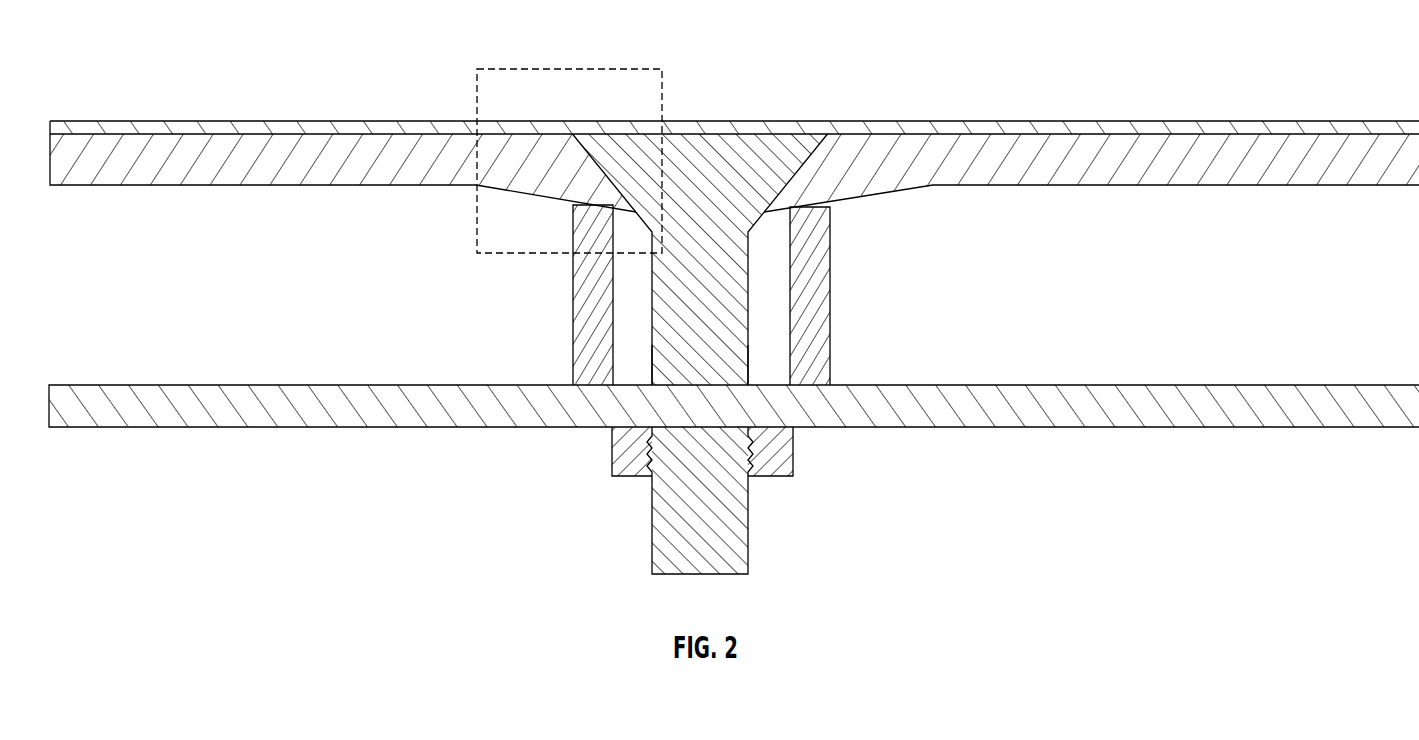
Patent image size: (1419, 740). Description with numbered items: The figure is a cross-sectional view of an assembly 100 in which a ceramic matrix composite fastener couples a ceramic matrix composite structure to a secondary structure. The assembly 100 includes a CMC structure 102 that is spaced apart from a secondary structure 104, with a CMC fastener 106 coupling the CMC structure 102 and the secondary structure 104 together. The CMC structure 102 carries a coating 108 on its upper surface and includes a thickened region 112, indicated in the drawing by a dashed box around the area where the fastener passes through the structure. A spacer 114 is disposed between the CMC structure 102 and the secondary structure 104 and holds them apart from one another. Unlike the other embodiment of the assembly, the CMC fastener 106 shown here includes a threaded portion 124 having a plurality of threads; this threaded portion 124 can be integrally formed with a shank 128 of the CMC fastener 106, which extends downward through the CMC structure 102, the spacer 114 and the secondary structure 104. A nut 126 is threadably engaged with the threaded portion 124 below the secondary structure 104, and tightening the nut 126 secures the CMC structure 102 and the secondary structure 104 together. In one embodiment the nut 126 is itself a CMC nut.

The assembly 100 is at (178, 78).
The CMC structure 102 is at (993, 143).
The secondary structure 104 is at (415, 413).
The CMC fastener 106 is at (737, 333).
The coating 108 is at (420, 130).
The thickened region 112 is at (662, 97).
The spacer 114 is at (587, 305).
The threaded portion 124 is at (693, 524).
The nut 126 is at (767, 463).
The shank 128 is at (680, 370).